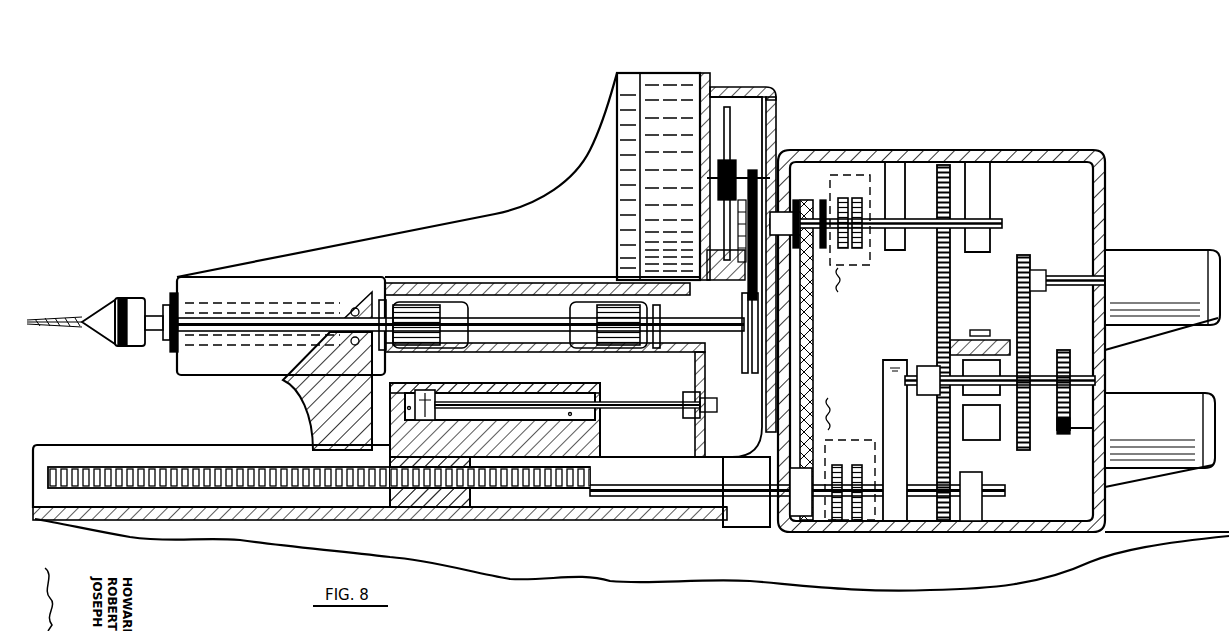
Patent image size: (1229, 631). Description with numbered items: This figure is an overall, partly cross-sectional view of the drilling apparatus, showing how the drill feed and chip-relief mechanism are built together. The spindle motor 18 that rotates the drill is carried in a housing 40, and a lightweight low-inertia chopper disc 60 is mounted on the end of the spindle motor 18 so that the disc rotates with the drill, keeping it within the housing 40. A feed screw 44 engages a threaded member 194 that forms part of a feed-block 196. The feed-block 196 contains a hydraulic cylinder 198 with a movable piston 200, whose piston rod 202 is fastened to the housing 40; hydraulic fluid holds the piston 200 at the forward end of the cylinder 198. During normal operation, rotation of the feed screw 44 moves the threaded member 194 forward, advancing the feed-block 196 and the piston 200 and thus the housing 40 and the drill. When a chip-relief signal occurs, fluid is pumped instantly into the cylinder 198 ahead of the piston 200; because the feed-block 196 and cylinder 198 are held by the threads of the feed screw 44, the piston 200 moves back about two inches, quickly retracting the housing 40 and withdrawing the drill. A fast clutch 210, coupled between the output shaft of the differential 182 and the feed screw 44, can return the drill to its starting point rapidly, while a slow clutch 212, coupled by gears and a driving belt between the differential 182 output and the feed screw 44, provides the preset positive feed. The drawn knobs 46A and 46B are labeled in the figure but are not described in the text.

The spindle motor 18 is at (665, 95).
The housing 40 is at (481, 210).
The feed screw 44 is at (178, 470).
The control knob 46A is at (1188, 297).
The control knob 46B is at (1136, 418).
The chopper disc 60 is at (730, 152).
The differential 182 is at (988, 318).
The threaded member 194 is at (388, 497).
The feed-block 196 is at (600, 440).
The hydraulic cylinder 198 is at (600, 388).
The piston 200 is at (427, 420).
The piston rod 202 is at (496, 408).
The fast clutch 210 is at (851, 446).
The slow clutch 212 is at (853, 264).